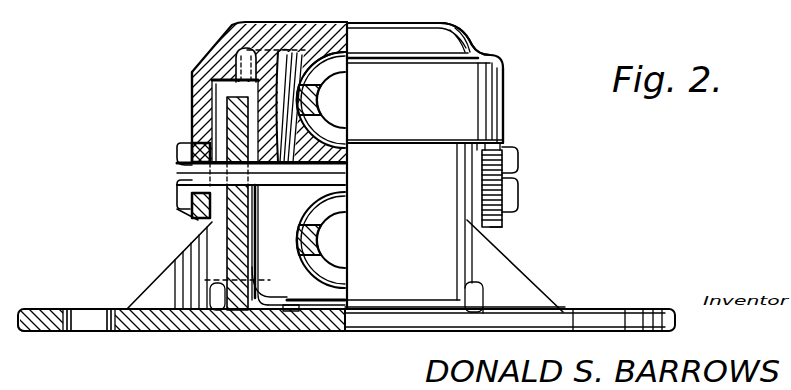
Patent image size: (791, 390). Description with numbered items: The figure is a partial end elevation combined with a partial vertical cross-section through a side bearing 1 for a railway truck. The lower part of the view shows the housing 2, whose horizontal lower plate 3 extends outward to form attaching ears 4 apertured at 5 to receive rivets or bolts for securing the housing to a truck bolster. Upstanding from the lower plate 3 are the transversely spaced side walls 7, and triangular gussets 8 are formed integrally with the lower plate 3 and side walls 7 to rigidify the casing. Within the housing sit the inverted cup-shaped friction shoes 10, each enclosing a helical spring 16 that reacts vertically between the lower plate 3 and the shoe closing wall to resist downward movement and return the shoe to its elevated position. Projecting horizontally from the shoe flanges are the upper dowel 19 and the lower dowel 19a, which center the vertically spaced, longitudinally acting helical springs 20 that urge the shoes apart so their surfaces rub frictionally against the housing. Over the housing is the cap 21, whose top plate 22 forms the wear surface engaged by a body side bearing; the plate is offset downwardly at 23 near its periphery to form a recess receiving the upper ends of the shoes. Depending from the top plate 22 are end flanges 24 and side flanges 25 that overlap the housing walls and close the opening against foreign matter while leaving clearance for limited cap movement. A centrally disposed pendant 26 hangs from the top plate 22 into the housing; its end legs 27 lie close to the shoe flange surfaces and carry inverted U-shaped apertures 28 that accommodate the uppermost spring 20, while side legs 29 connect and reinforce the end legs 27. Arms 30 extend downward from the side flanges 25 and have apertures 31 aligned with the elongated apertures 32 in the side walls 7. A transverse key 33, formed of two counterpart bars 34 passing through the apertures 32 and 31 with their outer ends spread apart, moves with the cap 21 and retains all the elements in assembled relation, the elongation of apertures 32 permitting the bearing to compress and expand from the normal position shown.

The side bearing 1 is at (504, 92).
The housing 2 is at (33, 309).
The lower plate 3 is at (38, 331).
The attaching ears 4 is at (641, 315).
The aperture 5 is at (96, 311).
The side walls 7 is at (246, 243).
The gussets 8 is at (168, 282).
The friction shoes 10 is at (274, 271).
The helical spring 16 is at (322, 309).
The upper dowel 19 is at (335, 99).
The lower dowel 19a is at (337, 240).
The helical springs 20 is at (340, 141).
The cap 21 is at (418, 32).
The top plate 22 is at (326, 19).
The offset portion 23 is at (210, 58).
The end flanges 24 is at (425, 83).
The side flanges 25 is at (191, 108).
The pendant 26 is at (238, 202).
The end legs 27 is at (293, 130).
The inverted U-shaped apertures 28 is at (303, 70).
The side legs 29 is at (256, 60).
The arms 30 is at (198, 221).
The arm apertures 31 is at (188, 203).
The elongated apertures 32 is at (258, 208).
The key 33 is at (518, 200).
The bars 34 is at (175, 153).